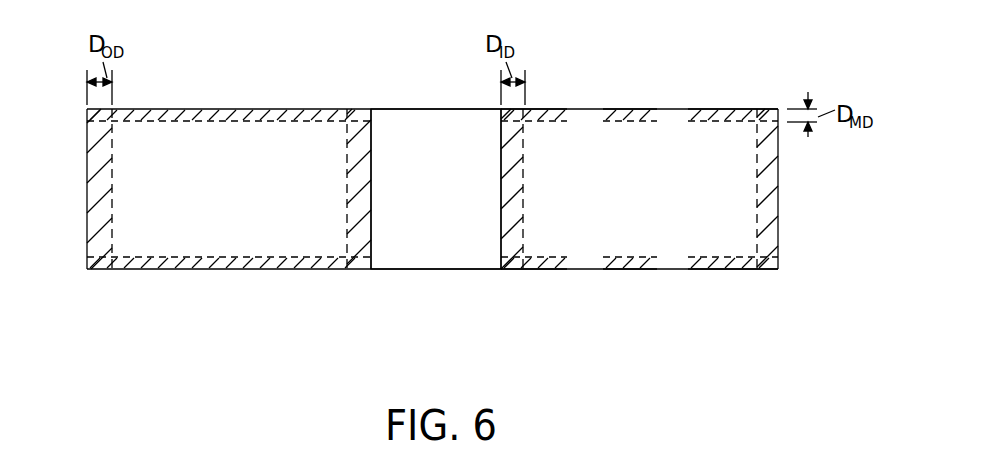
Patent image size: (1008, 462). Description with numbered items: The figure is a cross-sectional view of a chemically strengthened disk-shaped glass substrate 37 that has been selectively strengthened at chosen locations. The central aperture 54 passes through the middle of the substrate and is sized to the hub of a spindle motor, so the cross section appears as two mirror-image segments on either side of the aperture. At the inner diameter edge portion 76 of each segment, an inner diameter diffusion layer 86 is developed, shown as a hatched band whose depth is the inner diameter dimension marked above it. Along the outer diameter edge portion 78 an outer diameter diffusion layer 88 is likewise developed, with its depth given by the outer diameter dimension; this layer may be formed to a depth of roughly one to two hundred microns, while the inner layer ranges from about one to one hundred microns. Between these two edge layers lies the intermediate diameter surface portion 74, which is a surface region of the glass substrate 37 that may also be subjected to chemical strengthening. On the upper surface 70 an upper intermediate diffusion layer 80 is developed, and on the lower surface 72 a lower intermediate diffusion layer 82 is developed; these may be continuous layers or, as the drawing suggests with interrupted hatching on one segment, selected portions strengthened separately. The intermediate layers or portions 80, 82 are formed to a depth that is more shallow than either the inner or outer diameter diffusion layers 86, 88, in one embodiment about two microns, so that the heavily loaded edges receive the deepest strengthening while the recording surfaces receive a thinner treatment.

The disk-shaped glass substrate 37 is at (584, 143).
The central aperture 54 is at (430, 101).
The upper surface 70 is at (583, 109).
The lower surface 72 is at (672, 270).
The intermediate diameter surface portion 74 is at (434, 189).
The inner diameter edge portion 76 is at (371, 159).
The outer diameter edge portion 78 is at (87, 182).
The upper intermediate diffusion layer 80 is at (275, 108).
The lower intermediate diffusion layer 82 is at (290, 270).
The inner diameter diffusion layer 86 is at (355, 181).
The outer diameter diffusion layer 88 is at (100, 228).